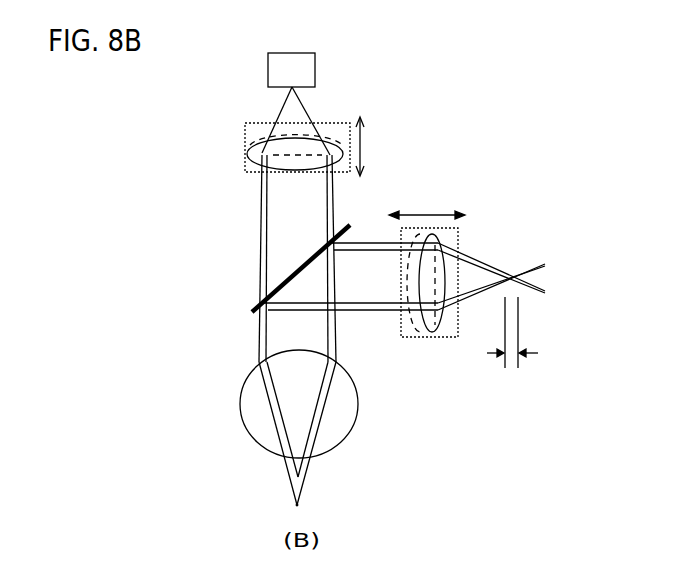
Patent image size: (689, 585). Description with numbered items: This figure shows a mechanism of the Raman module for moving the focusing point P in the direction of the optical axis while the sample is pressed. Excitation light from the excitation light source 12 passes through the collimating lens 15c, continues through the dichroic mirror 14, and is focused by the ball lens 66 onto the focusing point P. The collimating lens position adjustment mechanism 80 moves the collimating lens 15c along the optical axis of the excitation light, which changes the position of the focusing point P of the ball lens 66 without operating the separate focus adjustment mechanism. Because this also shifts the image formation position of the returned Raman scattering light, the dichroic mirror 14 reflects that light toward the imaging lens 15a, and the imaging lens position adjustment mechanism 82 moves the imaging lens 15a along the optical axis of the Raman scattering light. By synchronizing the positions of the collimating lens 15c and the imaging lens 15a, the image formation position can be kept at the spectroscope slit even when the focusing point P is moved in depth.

The excitation light source 12 is at (268, 73).
The collimating lens position adjustment mechanism 80 is at (332, 125).
The collimating lens 15c is at (247, 157).
The dichroic mirror 14 is at (280, 280).
The imaging lens position adjustment mechanism 82 is at (458, 245).
The imaging lens 15a is at (440, 325).
The ball lens 66 is at (242, 423).
The focusing point P is at (312, 492).